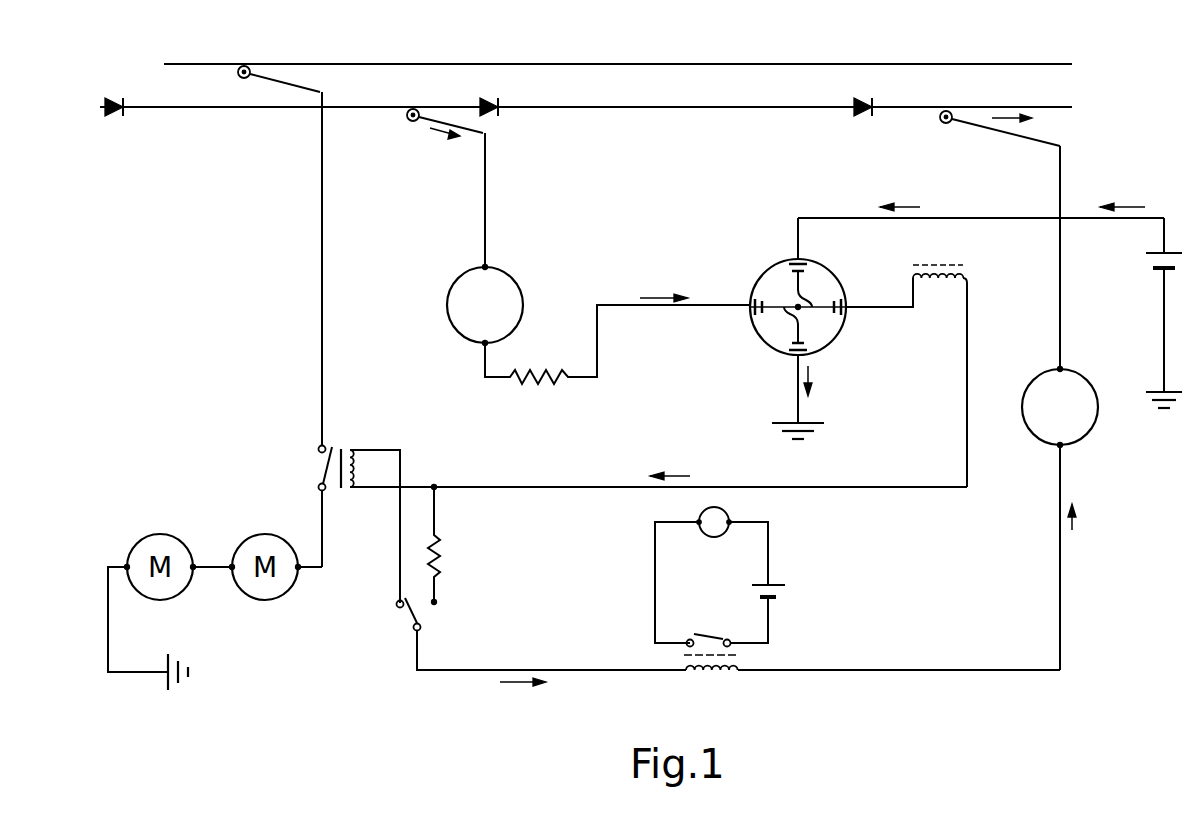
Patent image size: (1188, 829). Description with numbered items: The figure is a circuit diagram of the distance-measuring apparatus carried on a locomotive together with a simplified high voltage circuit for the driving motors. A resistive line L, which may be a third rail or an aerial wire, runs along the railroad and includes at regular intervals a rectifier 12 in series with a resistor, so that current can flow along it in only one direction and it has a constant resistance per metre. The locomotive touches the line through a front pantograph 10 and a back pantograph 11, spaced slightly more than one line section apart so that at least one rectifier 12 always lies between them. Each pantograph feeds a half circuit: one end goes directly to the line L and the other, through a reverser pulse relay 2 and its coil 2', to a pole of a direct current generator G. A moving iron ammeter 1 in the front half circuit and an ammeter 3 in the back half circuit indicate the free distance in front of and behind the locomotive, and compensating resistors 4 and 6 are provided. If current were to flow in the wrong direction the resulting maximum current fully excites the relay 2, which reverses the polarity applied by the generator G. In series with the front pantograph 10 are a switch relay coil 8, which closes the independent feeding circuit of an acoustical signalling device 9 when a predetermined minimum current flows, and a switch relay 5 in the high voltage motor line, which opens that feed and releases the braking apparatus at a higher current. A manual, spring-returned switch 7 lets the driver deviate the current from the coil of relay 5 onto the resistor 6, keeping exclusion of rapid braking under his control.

The ammeter 1 is at (1072, 519).
The reverser pulse relay 2 is at (957, 321).
The reverser relay coil 2' is at (906, 376).
The ammeter 3 is at (470, 305).
The compensating resistor 4 is at (617, 356).
The first switch relay 5 is at (630, 525).
The compensating resistor 6 is at (445, 545).
The electrical switch 7 is at (530, 642).
The second switch relay 8 is at (873, 687).
The acoustical signalling device 9 is at (722, 581).
The front pantograph 10 is at (986, 240).
The back pantograph 11 is at (439, 188).
The rectifier 12 is at (677, 93).
The resistive line L is at (586, 90).
The generator G is at (1142, 305).